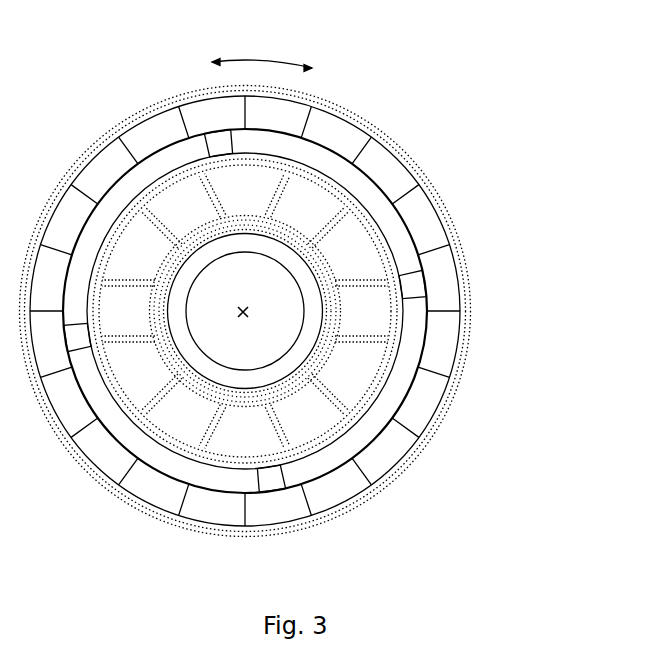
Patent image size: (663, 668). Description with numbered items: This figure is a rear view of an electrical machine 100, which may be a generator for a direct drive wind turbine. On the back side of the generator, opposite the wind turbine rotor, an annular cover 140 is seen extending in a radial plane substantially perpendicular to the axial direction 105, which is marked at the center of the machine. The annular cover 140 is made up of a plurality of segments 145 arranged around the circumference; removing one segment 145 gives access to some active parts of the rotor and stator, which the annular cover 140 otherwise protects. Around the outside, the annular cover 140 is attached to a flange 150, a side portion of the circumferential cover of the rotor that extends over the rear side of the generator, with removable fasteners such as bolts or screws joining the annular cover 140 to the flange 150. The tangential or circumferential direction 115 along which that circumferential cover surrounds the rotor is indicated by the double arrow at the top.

The electrical machine 100 is at (448, 130).
The axial direction 105 is at (240, 314).
The tangential or circumferential direction 115 is at (267, 58).
The annular cover 140 is at (445, 282).
The segment 145 is at (437, 348).
The flange 150 is at (132, 120).